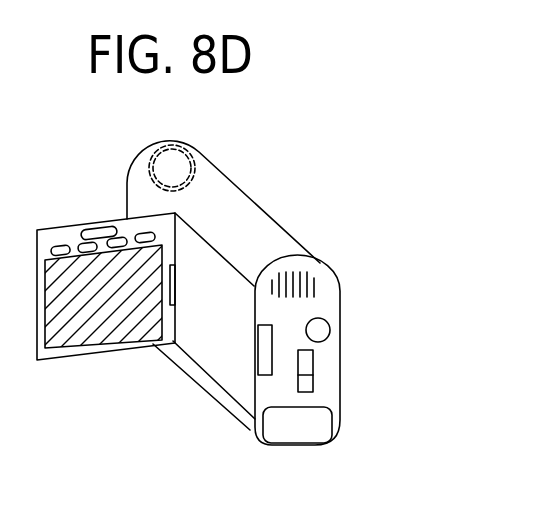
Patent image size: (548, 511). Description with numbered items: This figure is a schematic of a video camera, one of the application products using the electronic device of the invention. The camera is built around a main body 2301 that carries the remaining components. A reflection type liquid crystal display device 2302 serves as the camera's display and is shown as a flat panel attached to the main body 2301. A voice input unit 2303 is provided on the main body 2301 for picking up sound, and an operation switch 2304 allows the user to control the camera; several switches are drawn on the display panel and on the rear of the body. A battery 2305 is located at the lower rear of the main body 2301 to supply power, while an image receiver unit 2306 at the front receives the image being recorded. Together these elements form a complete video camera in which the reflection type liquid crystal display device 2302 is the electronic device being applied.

The main body 2301 is at (232, 205).
The reflection type liquid crystal display device 2302 is at (118, 338).
The voice input unit 2303 is at (313, 288).
The operation switch 2304 is at (100, 229).
The battery 2305 is at (288, 426).
The image receiver unit 2306 is at (146, 147).